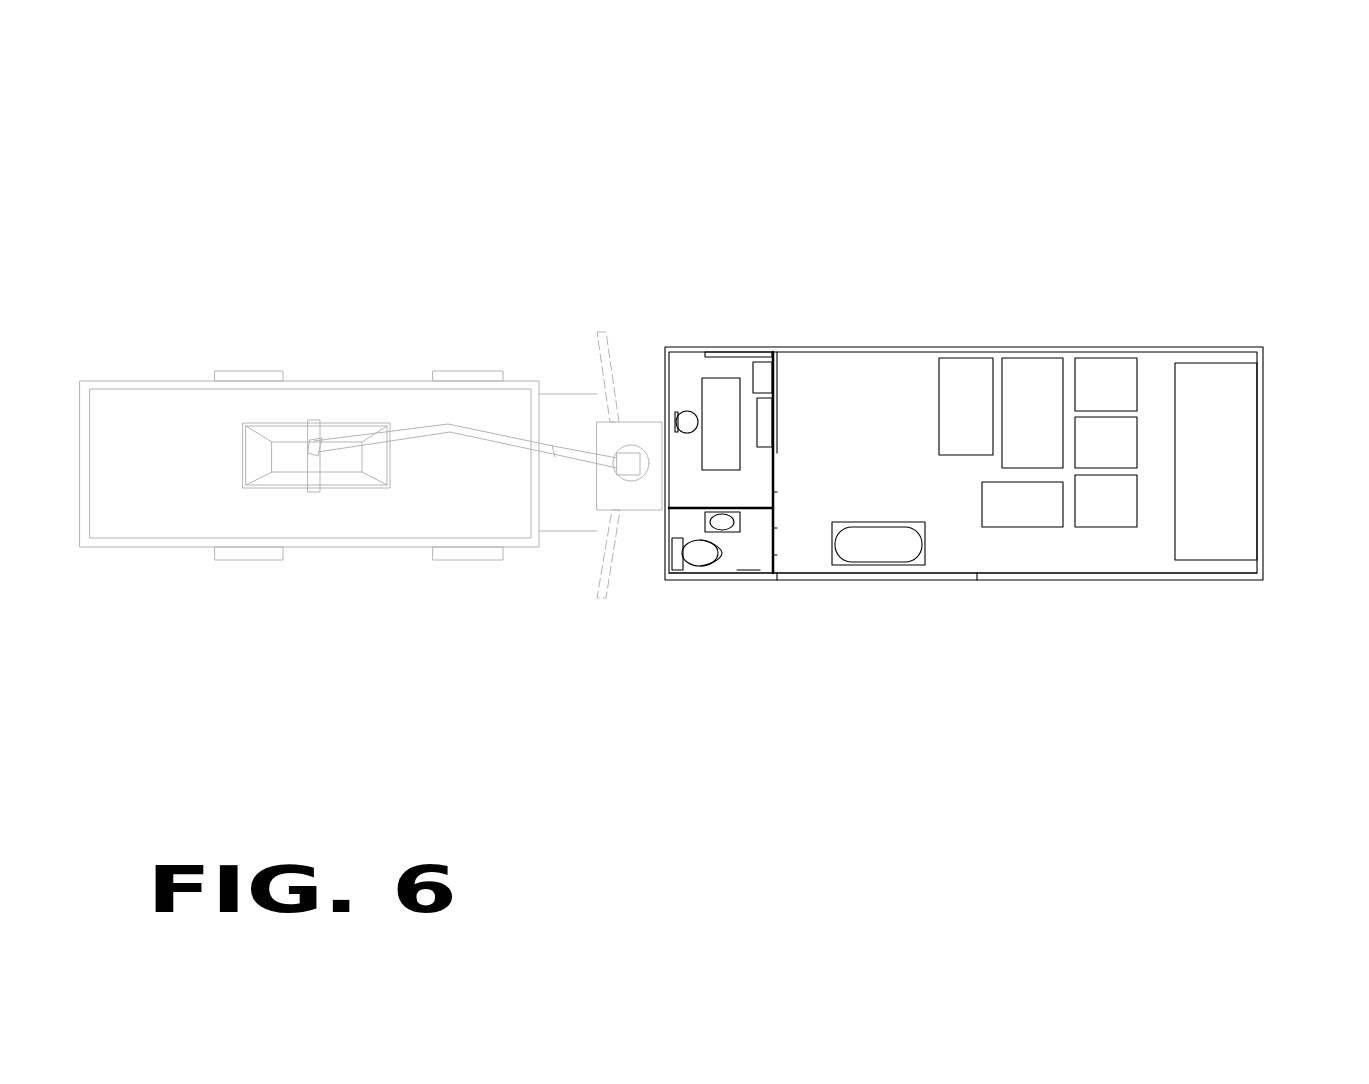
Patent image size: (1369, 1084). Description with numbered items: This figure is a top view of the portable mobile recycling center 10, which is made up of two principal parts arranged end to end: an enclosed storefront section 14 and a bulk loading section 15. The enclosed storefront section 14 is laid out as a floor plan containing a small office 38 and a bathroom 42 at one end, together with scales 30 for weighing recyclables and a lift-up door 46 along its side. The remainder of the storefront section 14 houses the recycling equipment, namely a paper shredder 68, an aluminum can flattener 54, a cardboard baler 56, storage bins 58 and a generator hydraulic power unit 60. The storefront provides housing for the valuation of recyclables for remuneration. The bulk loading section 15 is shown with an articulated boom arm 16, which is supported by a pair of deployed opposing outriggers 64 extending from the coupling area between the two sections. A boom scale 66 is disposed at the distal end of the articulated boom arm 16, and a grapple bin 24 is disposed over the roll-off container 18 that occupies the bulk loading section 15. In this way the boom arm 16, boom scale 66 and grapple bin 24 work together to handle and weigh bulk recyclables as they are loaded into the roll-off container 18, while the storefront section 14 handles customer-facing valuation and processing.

The portable mobile recycling center 10 is at (1208, 155).
The enclosed storefront section 14 is at (1157, 348).
The bulk loading section 15 is at (325, 381).
The articulated boom arm 16 is at (415, 425).
The roll-off container 18 is at (310, 547).
The grapple bin 24 is at (258, 425).
The scales 30 is at (882, 565).
The small office 38 is at (712, 387).
The bathroom 42 is at (735, 560).
The lift-up door 46 is at (950, 579).
The aluminum can flattener 54 is at (999, 492).
The cardboard baler 56 is at (1042, 423).
The storage bins 58 is at (1117, 517).
The generator hydraulic power unit 60 is at (1248, 372).
The outriggers 64 is at (597, 333).
The boom scale 66 is at (317, 460).
The paper shredder 68 is at (970, 367).